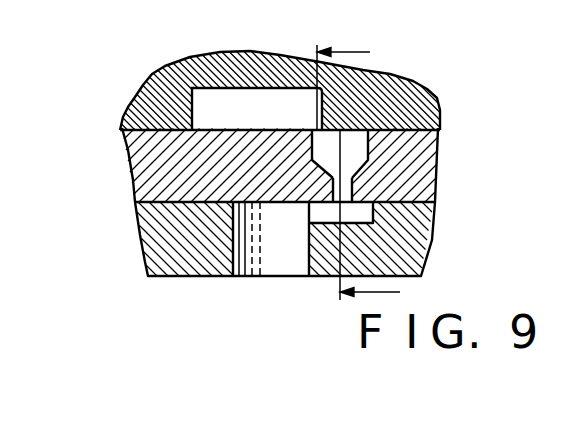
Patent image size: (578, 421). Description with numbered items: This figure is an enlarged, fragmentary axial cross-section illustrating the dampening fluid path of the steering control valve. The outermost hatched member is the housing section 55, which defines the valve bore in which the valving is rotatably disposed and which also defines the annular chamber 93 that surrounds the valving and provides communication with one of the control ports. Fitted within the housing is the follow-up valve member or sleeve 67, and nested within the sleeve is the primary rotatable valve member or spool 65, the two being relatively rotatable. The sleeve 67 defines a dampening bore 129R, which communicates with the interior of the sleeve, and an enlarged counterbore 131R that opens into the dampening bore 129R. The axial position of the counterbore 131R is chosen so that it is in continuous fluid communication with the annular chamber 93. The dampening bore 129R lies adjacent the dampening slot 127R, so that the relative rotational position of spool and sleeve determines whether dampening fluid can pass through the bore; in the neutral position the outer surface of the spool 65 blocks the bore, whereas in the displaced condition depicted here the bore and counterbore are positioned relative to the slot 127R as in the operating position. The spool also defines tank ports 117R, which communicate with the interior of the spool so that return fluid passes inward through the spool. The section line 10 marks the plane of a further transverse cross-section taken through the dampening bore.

The housing section 55 is at (164, 97).
The annular chamber 93 is at (274, 106).
The sleeve 67 is at (137, 180).
The spool 65 is at (162, 243).
The tank ports 117R is at (236, 249).
The counterbore 131R is at (360, 147).
The dampening bore 129R is at (344, 190).
The dampening slot 127R is at (357, 217).
The section line 10- 10 is at (374, 173).